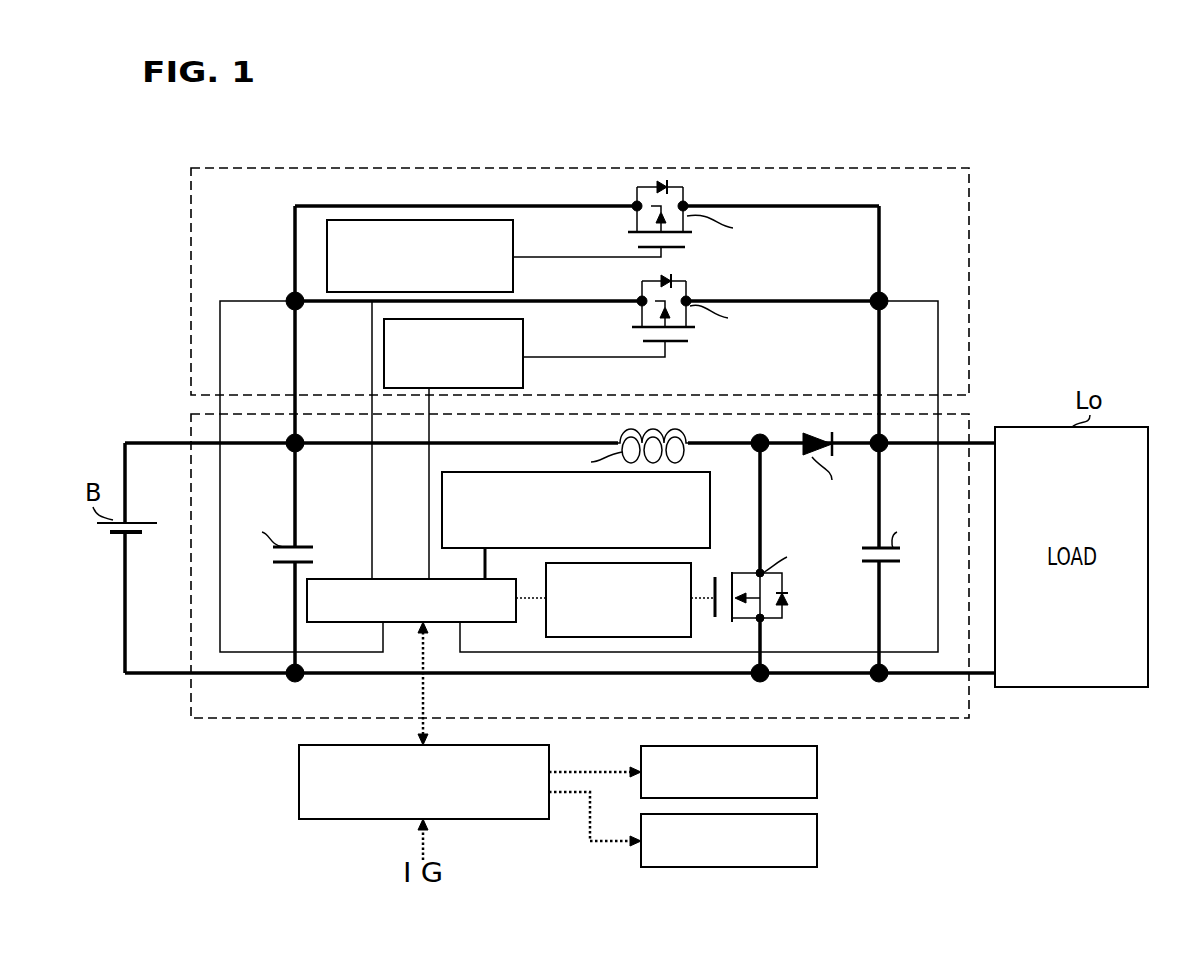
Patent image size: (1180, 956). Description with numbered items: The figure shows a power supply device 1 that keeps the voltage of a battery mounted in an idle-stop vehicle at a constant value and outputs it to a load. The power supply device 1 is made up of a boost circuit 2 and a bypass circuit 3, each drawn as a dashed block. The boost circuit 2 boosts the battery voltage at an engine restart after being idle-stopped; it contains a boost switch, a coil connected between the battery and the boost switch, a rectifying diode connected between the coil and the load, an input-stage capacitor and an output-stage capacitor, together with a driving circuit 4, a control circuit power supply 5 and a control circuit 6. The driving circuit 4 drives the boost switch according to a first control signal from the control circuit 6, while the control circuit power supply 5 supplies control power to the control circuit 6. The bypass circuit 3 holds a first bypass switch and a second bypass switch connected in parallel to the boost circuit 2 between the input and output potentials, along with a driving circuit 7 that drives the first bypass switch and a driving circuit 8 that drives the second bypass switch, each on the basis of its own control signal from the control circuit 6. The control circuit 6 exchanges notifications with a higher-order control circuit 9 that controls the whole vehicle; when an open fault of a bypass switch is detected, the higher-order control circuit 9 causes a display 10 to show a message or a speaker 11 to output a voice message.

The power supply device 1 is at (657, 157).
The boost circuit 2 is at (191, 700).
The bypass circuit 3 is at (191, 184).
The driving circuit 4 is at (691, 628).
The control circuit power supply 5 is at (710, 494).
The control circuit 6 is at (392, 579).
The driving circuit 7 is at (523, 347).
The driving circuit 8 is at (513, 241).
The higher-order control circuit 9 is at (299, 780).
The display 10 is at (817, 772).
The speaker 11 is at (817, 838).